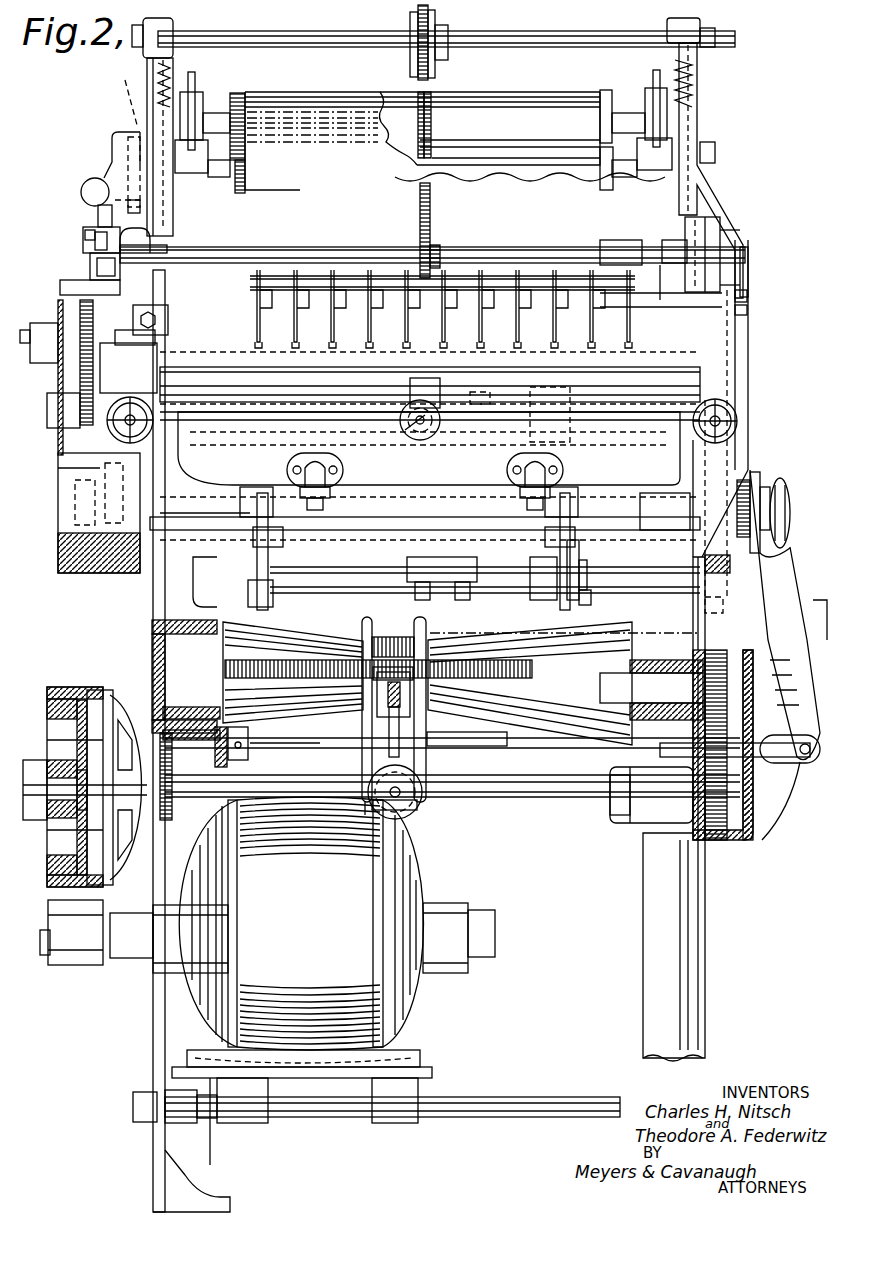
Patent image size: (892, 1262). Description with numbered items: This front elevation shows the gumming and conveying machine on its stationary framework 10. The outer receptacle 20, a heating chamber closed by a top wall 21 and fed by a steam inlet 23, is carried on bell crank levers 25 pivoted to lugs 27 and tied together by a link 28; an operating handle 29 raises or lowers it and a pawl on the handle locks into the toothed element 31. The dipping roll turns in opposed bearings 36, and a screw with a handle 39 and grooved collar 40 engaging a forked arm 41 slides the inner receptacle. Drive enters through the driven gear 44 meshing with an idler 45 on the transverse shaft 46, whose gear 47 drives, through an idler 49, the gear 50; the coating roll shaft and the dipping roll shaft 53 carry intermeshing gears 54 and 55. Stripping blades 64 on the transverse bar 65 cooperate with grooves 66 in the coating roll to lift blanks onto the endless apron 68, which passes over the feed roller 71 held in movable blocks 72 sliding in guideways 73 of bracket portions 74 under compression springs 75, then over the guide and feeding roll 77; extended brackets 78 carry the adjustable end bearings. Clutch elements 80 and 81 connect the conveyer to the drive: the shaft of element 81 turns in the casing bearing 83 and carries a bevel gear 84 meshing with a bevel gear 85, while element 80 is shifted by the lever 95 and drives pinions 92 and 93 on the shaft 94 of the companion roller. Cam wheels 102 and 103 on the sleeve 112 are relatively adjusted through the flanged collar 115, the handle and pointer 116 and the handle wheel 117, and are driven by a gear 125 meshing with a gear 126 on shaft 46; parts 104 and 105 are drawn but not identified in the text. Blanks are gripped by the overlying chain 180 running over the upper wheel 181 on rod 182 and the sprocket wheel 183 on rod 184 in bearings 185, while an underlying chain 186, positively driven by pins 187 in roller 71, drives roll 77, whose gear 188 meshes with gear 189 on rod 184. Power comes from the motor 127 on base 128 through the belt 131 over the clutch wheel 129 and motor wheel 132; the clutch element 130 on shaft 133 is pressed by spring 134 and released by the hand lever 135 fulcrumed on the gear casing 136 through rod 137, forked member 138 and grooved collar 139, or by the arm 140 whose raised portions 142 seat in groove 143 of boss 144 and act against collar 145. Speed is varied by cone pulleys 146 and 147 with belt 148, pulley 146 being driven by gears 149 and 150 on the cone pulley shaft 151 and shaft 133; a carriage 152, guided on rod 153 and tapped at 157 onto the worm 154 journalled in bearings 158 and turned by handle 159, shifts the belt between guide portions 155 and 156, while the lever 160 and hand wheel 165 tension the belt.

The stationary framework 10 is at (158, 1030).
The outer receptacle 20 is at (430, 448).
The top wall 21 is at (380, 383).
The steam inlet 23 is at (425, 481).
The bell crank levers 25 is at (256, 562).
The lugs 27 is at (248, 503).
The link 28 is at (248, 590).
The operating handle 29 is at (588, 578).
The toothed element 31 is at (580, 562).
The opposed bearings 36 is at (150, 320).
The operating handle 39 is at (405, 415).
The grooved collar 40 is at (403, 432).
The forked arm 41 is at (418, 392).
The driven gear 44 is at (760, 450).
The idler 45 is at (748, 428).
The transverse shaft 46 is at (82, 420).
The gear 47 is at (78, 396).
The idler 49 is at (85, 312).
The gear 50 is at (60, 325).
The shaft 53 is at (750, 376).
The gear 54 is at (748, 298).
The gear 55 is at (748, 312).
The stripping blades 64 is at (344, 270).
The transverse bar 65 is at (622, 300).
The grooves 66 is at (305, 350).
The endless belt or apron 68 is at (292, 94).
The feed roller 71 is at (600, 100).
The vertically movable blocks 72 is at (192, 110).
The guideways 73 is at (150, 65).
The upstanding bracket portions 74 is at (172, 30).
The compression springs 75 is at (170, 75).
The guide and feeding roll 77 is at (606, 262).
The extended brackets 78 is at (200, 100).
The clutch element 80 is at (85, 230).
The clutch element 81 is at (95, 265).
The casing bearing 83 is at (98, 228).
The bevel gear 84 is at (110, 140).
The bevel gear 85 is at (90, 180).
The pinion 92 is at (128, 108).
The pinion 93 is at (133, 213).
The shaft 94 is at (238, 185).
The lever 95 is at (95, 240).
The wheel 102 is at (70, 530).
The wheel 103 is at (98, 473).
The bar 104 is at (80, 510).
The bar 105 is at (92, 490).
The sleeve 112 is at (668, 510).
The flanged collar 115 is at (750, 472).
The handle and pointer 116 is at (788, 550).
The handle wheel 117 is at (786, 490).
The gear 125 is at (540, 605).
The companion gear 126 is at (542, 392).
The motor 127 is at (302, 923).
The base 128 is at (412, 1060).
The clutch wheel 129 is at (85, 705).
The clutch element 130 is at (52, 720).
The driving belt 131 is at (82, 695).
The wheel 132 is at (45, 968).
The shaft 133 is at (548, 800).
The compression spring 134 is at (180, 810).
The hand controlled lever 135 is at (790, 604).
The gear casing 136 is at (755, 852).
The rod 137 is at (332, 735).
The forked member 138 is at (145, 748).
The grooved collar 139 is at (75, 795).
The arm 140 is at (250, 750).
The raised portions 142 is at (305, 680).
The groove 143 is at (215, 735).
The boss 144 is at (115, 740).
The collar 145 is at (300, 744).
The cone pulley 146 is at (530, 683).
The cone pulley 147 is at (300, 628).
The driving belt 148 is at (402, 692).
The gear 149 is at (755, 656).
The gear 150 is at (718, 793).
The cone pulley shaft 151 is at (662, 690).
The carriage 152 is at (430, 778).
The rod 153 is at (462, 746).
The endless screw or worm 154 is at (367, 630).
The guide portion 155 is at (414, 630).
The guide portion 156 is at (402, 800).
The tapped bore 157 is at (412, 660).
The opposed bearings 158 is at (185, 650).
The rotating handle 159 is at (815, 630).
The lever 160 is at (400, 712).
The hand wheel 165 is at (432, 792).
The overlying chain 180 is at (440, 17).
The upper wheel 181 is at (448, 27).
The rod 182 is at (292, 33).
The sprocket wheel 183 is at (432, 248).
The rod 184 is at (512, 250).
The opposed bearings 185 is at (152, 255).
The underlying chain 186 is at (434, 155).
The pins 187 is at (430, 128).
The gear 188 is at (712, 258).
The gear 189 is at (730, 215).